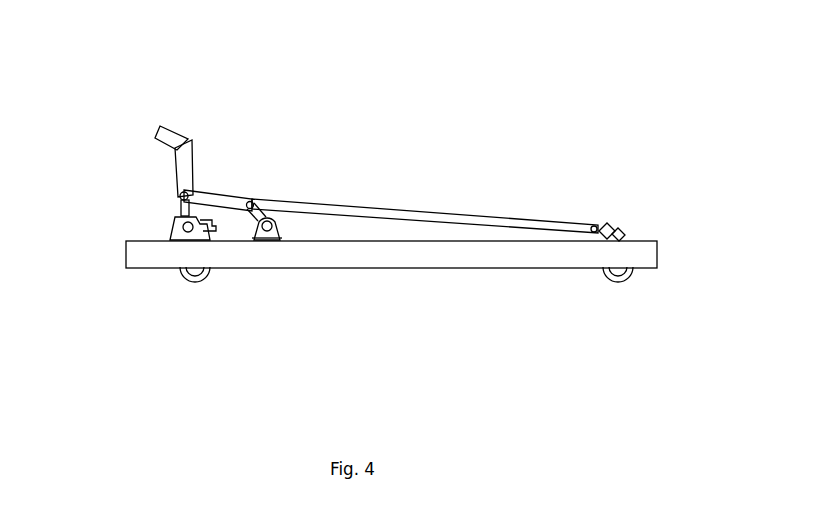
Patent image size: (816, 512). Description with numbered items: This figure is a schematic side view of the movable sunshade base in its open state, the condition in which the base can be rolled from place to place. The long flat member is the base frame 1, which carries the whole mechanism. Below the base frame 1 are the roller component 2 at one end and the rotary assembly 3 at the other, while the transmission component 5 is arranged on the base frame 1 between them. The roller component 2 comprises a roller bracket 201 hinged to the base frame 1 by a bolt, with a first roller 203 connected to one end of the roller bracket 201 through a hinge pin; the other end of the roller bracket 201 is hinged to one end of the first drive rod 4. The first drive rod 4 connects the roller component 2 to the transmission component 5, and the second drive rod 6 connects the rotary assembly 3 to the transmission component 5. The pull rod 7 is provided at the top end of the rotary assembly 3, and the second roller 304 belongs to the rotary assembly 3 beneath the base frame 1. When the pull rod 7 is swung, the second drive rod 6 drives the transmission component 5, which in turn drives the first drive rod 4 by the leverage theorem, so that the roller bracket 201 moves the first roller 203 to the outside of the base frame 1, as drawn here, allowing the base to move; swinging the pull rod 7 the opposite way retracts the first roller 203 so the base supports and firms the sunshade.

The base frame 1 is at (123, 252).
The roller component 2 is at (623, 232).
The rotary assembly 3 is at (172, 228).
The first drive rod 4 is at (425, 212).
The transmission component 5 is at (265, 243).
The second drive rod 6 is at (219, 205).
The pull rod 7 is at (170, 128).
The roller bracket 201 is at (603, 226).
The first roller 203 is at (615, 280).
The second roller 304 is at (190, 280).